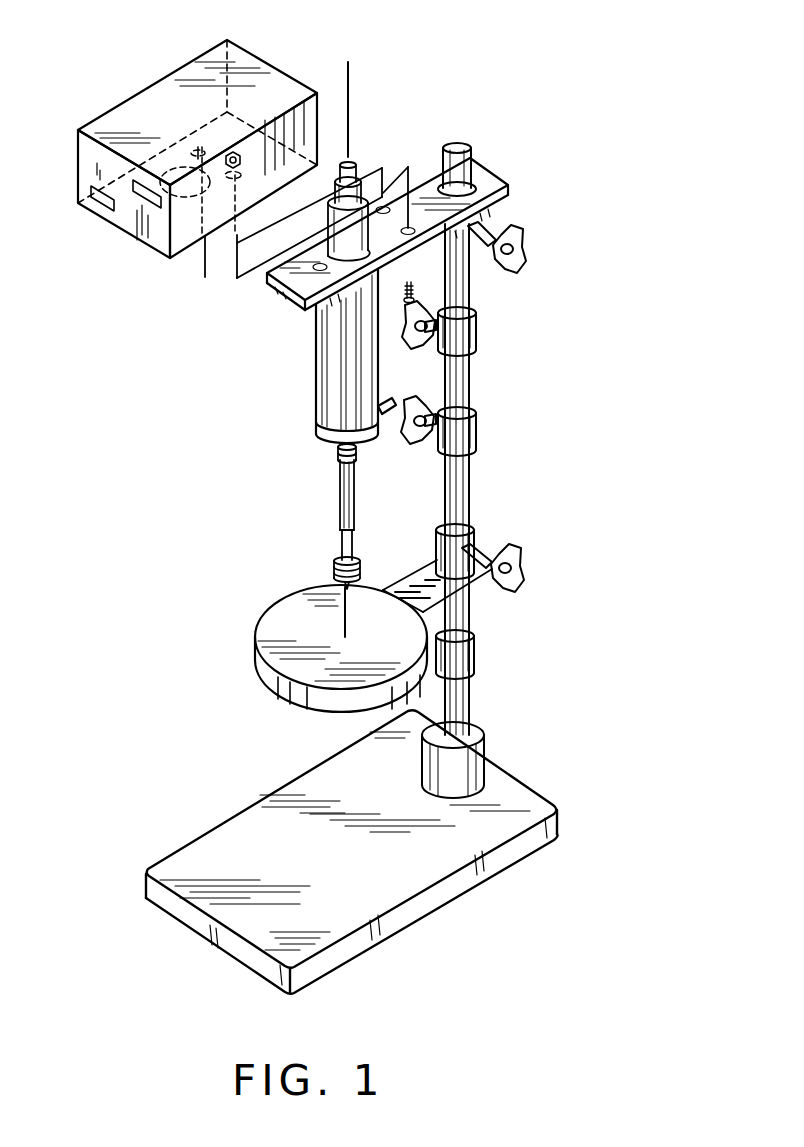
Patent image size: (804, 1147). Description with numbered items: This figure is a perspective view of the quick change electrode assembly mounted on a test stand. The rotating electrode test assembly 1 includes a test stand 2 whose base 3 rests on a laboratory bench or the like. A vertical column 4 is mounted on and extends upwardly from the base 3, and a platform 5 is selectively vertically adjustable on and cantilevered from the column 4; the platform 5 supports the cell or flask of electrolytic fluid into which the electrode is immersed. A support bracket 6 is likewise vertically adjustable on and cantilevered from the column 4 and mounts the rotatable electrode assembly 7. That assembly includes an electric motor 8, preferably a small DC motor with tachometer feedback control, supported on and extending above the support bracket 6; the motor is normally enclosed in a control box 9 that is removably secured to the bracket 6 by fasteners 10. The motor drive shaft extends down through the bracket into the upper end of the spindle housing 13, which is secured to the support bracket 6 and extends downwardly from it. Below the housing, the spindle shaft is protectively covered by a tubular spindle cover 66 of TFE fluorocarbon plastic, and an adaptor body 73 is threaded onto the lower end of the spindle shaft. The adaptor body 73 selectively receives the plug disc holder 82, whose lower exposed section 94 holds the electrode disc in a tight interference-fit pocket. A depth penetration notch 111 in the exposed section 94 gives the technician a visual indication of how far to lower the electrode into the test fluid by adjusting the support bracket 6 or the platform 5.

The rotating electrode test assembly 1 is at (317, 429).
The test stand 2 is at (348, 62).
The base 3 is at (253, 832).
The vertical column 4 is at (468, 282).
The platform 5 is at (283, 627).
The support bracket 6 is at (428, 188).
The rotatable electrode assembly 7 is at (306, 461).
The electric motor 8 is at (350, 236).
The control box 9 is at (125, 217).
The fasteners 10 is at (242, 160).
The spindle housing 13 is at (338, 362).
The tubular spindle cover 66 is at (357, 482).
The adaptor body 73 is at (340, 534).
The plug disc holder 82 is at (368, 549).
The lower exposed section 94 is at (360, 580).
The depth penetration notch 111 is at (333, 564).